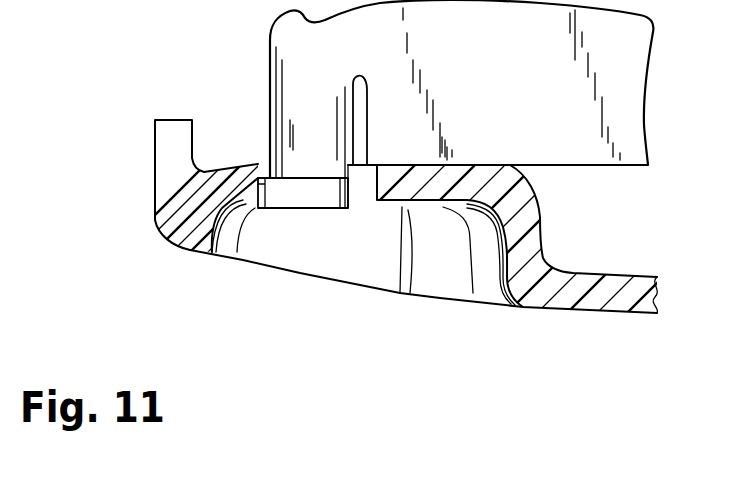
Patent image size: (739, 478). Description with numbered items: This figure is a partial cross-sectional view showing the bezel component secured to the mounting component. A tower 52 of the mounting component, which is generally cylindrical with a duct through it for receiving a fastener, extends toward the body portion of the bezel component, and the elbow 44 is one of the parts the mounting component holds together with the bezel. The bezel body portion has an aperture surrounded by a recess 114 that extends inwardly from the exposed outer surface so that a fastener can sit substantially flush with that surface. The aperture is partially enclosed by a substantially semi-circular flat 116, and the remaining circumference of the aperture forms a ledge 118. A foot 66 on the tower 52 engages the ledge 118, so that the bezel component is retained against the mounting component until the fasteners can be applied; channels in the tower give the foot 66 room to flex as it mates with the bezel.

The elbow 44 is at (618, 104).
The tower 52 is at (302, 78).
The foot 66 is at (313, 198).
The recess 114 is at (500, 275).
The semi-circular flat 116 is at (409, 211).
The ledge 118 is at (258, 190).